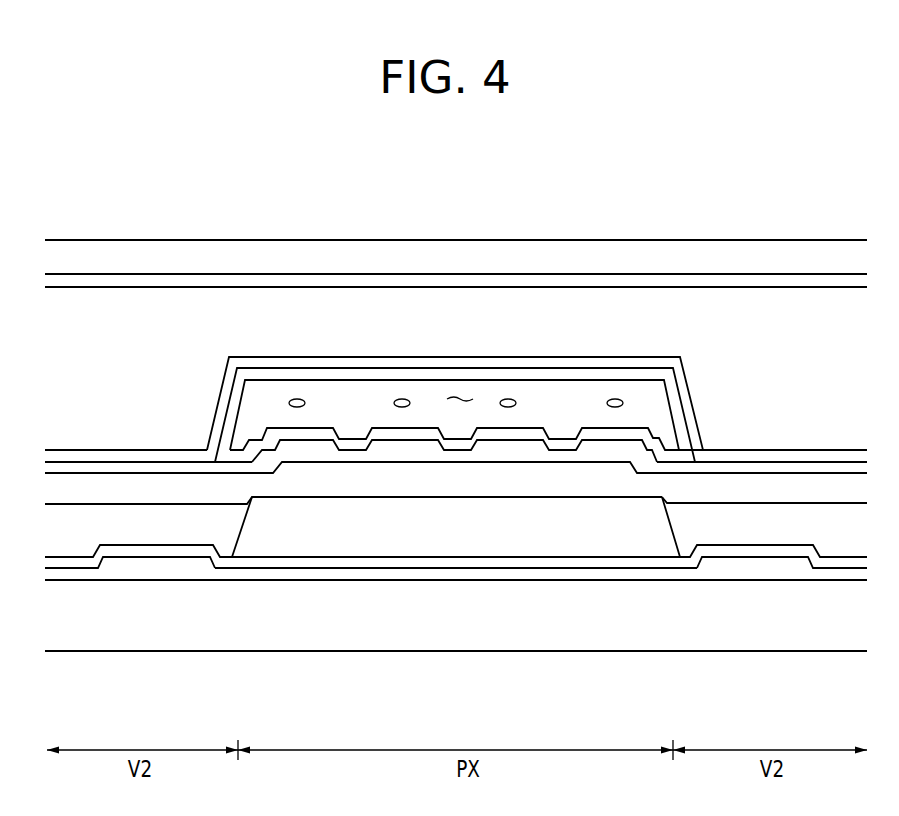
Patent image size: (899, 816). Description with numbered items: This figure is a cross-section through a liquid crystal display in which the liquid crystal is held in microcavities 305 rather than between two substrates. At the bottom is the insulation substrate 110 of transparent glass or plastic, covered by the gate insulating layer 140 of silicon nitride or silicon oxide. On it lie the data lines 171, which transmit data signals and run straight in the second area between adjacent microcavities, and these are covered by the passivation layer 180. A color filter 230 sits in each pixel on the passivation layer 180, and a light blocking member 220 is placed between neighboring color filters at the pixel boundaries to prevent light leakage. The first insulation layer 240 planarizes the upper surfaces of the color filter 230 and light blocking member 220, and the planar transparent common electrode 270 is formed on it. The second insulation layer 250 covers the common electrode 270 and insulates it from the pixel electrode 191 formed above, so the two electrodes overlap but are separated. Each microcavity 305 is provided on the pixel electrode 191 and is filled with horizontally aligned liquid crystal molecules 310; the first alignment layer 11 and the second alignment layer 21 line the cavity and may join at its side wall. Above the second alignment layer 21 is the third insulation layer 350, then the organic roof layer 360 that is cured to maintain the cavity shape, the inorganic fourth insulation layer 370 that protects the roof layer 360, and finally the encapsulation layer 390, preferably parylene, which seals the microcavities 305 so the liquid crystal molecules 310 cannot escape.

The second alignment layer 21 is at (270, 378).
The microcavity 305 is at (454, 398).
The liquid crystal molecules 310 is at (330, 405).
The third insulation layer 350 is at (613, 363).
The roof layer 360 is at (540, 312).
The encapsulation layer 390 is at (707, 257).
The fourth insulation layer 370 is at (781, 280).
The light blocking member 220 is at (78, 677).
The second insulation layer 250 is at (114, 702).
The data line 171 is at (156, 677).
The first insulation layer 240 is at (208, 677).
The color filter 230 is at (285, 677).
The insulation substrate 110 is at (335, 677).
The common electrode 270 is at (390, 677).
The first alignment layer 11 is at (460, 677).
The pixel electrode 191 is at (518, 677).
The passivation layer 180 is at (624, 677).
The gate insulating layer 140 is at (683, 677).